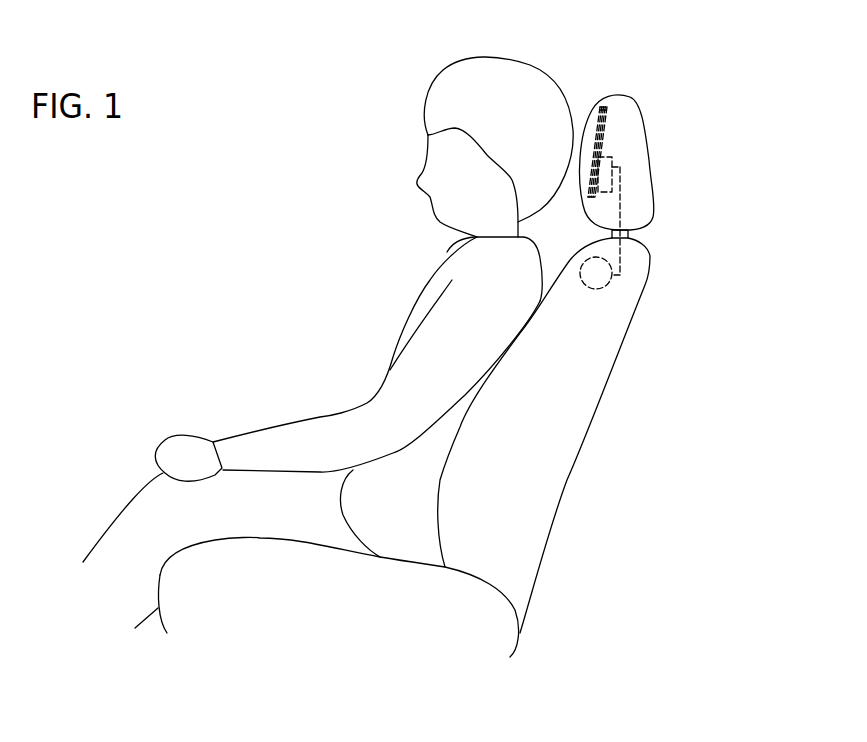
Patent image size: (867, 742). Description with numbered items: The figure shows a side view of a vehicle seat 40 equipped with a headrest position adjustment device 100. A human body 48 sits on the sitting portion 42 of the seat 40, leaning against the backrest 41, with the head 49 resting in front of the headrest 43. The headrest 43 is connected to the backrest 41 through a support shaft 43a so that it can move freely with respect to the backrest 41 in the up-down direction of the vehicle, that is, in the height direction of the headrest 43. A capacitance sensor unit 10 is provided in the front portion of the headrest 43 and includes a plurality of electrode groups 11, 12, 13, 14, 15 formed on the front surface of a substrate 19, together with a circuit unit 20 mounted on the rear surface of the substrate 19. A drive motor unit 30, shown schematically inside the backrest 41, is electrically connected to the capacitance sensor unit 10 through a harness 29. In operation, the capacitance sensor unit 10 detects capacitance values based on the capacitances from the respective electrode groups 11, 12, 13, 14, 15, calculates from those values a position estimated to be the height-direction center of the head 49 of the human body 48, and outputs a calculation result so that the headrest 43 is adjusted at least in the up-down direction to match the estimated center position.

The headrest position adjustment device 100 is at (731, 29).
The capacitance sensor unit 10 is at (623, 201).
The electrode group 11 is at (592, 192).
The electrode group 12 is at (596, 168).
The electrode group 13 is at (598, 150).
The electrode group 14 is at (601, 127).
The electrode group 15 is at (603, 110).
The substrate 19 is at (605, 123).
The circuit unit 20 is at (613, 165).
The harness 29 is at (625, 215).
The drive motor unit 30 is at (613, 282).
The seat 40 is at (454, 390).
The backrest 41 is at (582, 443).
The sitting portion 42 is at (290, 607).
The headrest 43 is at (652, 184).
The support shaft 43a is at (628, 238).
The human body 48 is at (412, 305).
The head 49 is at (495, 57).